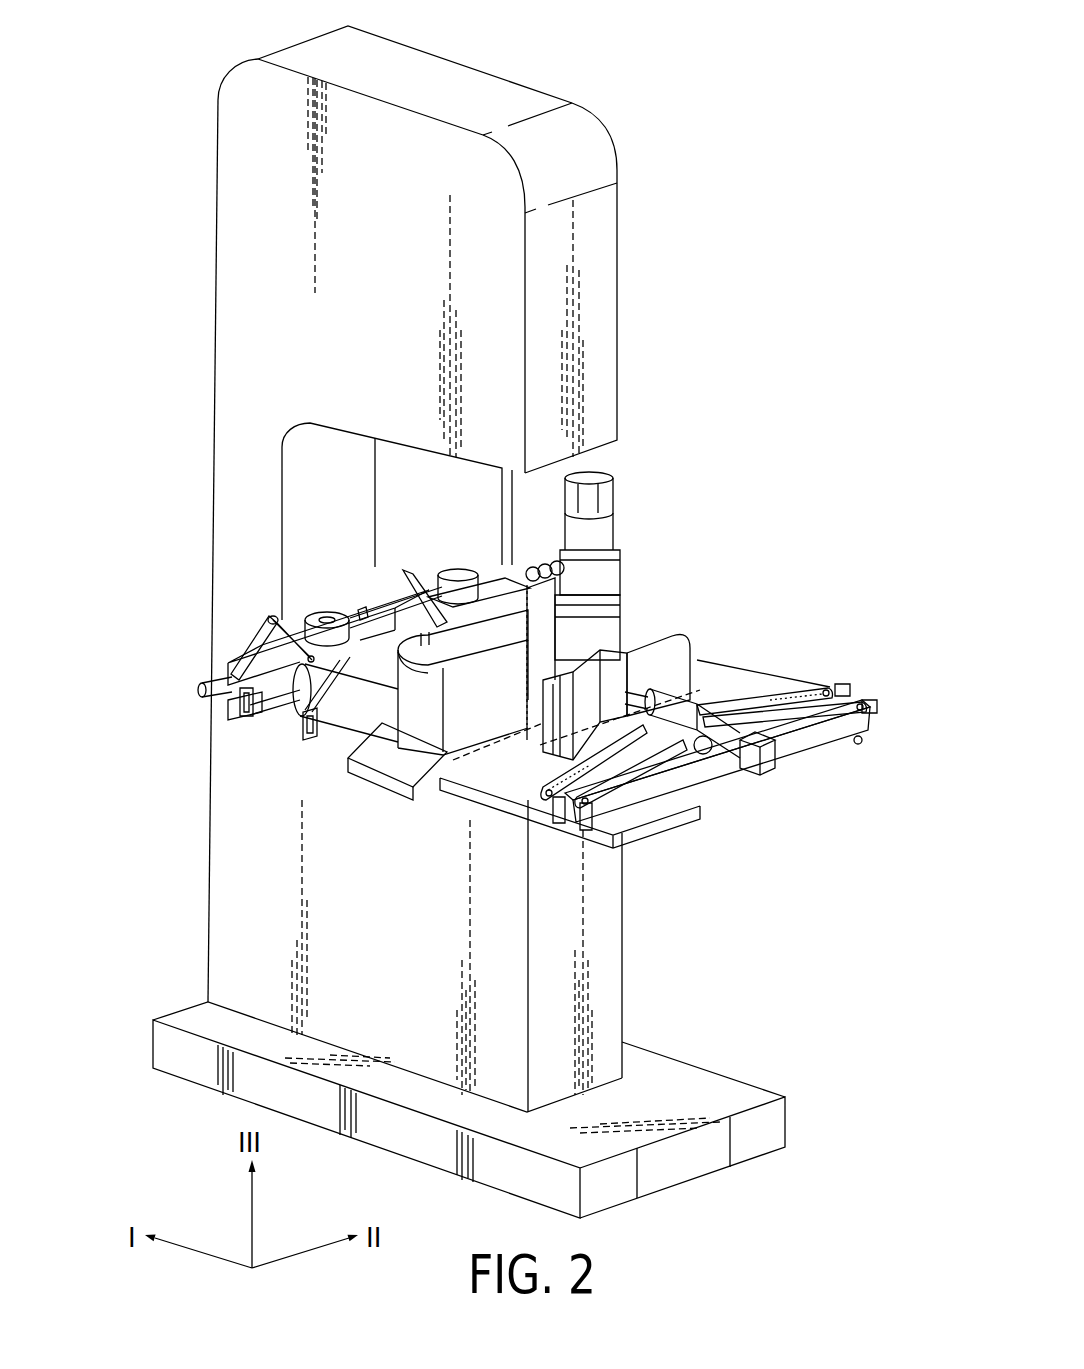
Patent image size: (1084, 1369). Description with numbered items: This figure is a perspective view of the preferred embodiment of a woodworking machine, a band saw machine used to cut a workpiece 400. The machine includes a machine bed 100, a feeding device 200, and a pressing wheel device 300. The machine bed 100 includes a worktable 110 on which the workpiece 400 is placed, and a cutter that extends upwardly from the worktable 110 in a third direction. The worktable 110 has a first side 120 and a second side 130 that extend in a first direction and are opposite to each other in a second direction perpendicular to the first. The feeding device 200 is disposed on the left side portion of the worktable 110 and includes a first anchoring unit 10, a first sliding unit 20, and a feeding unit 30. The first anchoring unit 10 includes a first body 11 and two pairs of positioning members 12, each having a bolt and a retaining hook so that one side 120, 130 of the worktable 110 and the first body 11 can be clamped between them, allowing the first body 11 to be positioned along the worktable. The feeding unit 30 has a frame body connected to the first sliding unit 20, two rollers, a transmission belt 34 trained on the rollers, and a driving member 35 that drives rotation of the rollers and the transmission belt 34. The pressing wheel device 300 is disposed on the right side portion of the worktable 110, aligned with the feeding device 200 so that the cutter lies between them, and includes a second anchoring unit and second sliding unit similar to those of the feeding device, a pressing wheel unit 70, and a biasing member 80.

The machine bed 100 is at (205, 845).
The feeding device 200 is at (316, 600).
The first body 11 is at (247, 643).
The first side 120 is at (233, 698).
The positioning member 12 is at (237, 712).
The first anchoring unit 10 is at (314, 669).
The first sliding unit 20 is at (370, 700).
The workpiece 400 is at (403, 795).
The feeding unit 30 is at (656, 546).
The driving member 35 is at (603, 502).
The transmission belt 34 is at (600, 637).
The pressing wheel unit 70 is at (693, 626).
The second side 130 is at (765, 690).
The worktable 110 is at (745, 703).
The pressing wheel device 300 is at (849, 687).
The biasing member 80 is at (763, 772).